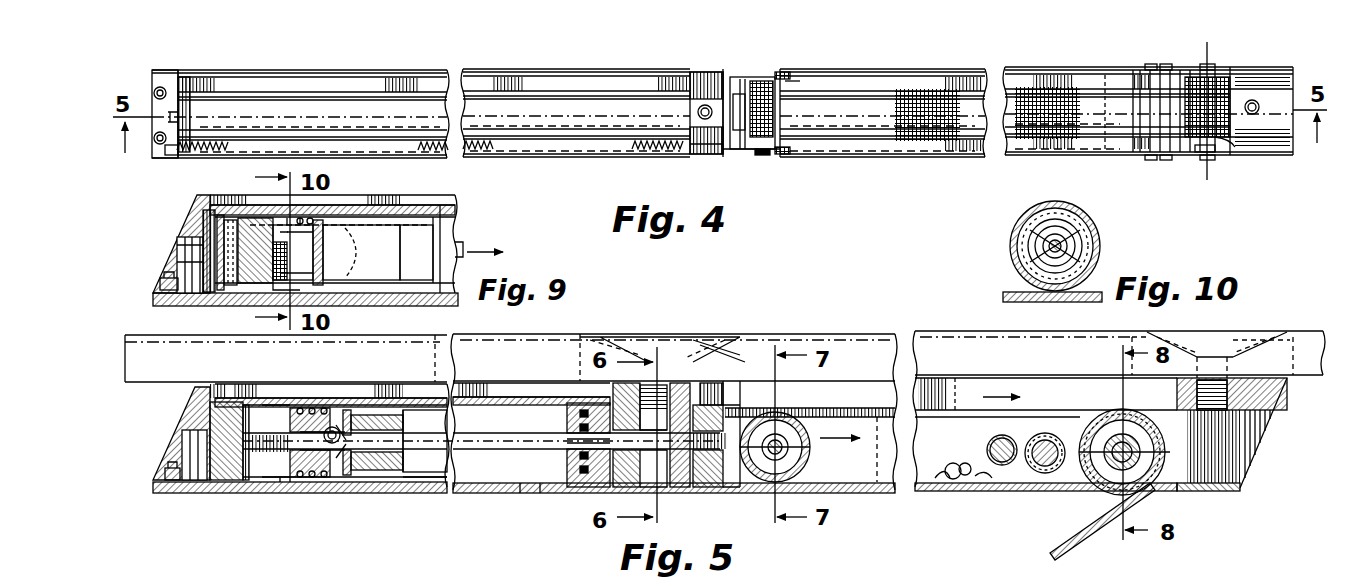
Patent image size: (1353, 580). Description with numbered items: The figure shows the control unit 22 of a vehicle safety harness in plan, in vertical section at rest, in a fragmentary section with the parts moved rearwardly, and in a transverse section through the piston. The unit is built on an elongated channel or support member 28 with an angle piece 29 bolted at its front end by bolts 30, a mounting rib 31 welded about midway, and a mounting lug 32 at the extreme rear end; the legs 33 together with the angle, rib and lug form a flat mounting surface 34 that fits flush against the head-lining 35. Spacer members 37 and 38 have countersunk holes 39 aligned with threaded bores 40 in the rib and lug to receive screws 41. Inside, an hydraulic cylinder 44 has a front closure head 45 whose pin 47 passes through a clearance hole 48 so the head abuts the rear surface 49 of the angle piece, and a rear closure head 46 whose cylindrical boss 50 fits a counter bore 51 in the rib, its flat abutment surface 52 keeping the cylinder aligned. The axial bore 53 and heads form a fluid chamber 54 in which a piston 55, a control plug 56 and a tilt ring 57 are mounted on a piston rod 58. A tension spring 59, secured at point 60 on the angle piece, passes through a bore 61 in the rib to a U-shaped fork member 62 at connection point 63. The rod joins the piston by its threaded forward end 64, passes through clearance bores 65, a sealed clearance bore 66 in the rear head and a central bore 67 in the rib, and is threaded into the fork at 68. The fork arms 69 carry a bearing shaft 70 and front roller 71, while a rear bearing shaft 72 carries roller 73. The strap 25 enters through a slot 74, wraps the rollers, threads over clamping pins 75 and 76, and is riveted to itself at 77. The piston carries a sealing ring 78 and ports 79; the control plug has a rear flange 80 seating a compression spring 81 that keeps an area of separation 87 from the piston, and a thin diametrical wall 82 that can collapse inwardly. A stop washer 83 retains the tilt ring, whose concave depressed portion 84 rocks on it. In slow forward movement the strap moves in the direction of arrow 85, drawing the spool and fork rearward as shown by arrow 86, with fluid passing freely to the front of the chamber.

In FIG. 4, the control unit 22 is at (626, 66).
In FIG. 9, the control unit 22 is at (436, 203).
In FIG. 5, the control unit 22 is at (503, 497).
In FIG. 5, the harness element strap 25 is at (853, 409).
In FIG. 4, the channel or support member 28 is at (307, 88).
In FIG. 9, the channel or support member 28 is at (171, 303).
In FIG. 10, the channel or support member 28 is at (1040, 298).
In FIG. 5, the channel or support member 28 is at (218, 497).
In FIG. 4, the angle piece 29 is at (178, 90).
In FIG. 9, the angle piece 29 is at (197, 213).
In FIG. 5, the angle piece 29 is at (200, 402).
In FIG. 4, the bolts 30 is at (155, 90).
In FIG. 9, the bolts 30 is at (177, 270).
In FIG. 4, the mounting rib 31 is at (701, 81).
In FIG. 5, the mounting rib 31 is at (673, 478).
In FIG. 4, the mounting lug 32 is at (1273, 79).
In FIG. 5, the mounting lug 32 is at (1271, 391).
In FIG. 4, the legs 33 is at (893, 68).
In FIG. 5, the legs 33 is at (1232, 448).
In FIG. 5, the mounting surface 34 is at (1077, 375).
In FIG. 5, the ceiling or head-lining material 35 is at (940, 377).
In FIG. 5, the spacer member 37 is at (728, 353).
In FIG. 5, the spacer member 38 is at (1282, 334).
In FIG. 5, the countersunk holes 39 is at (1228, 359).
In FIG. 4, the threaded bores 40 is at (1258, 106).
In FIG. 5, the threaded bores 40 is at (718, 397).
In FIG. 5, the screws 41 is at (653, 340).
In FIG. 9, the hydraulic cylinder 44 is at (388, 216).
In FIG. 10, the hydraulic cylinder 44 is at (1018, 221).
In FIG. 5, the hydraulic cylinder 44 is at (473, 397).
In FIG. 4, the front closure head 45 is at (182, 108).
In FIG. 9, the front closure head 45 is at (210, 208).
In FIG. 5, the front closure head 45 is at (210, 402).
In FIG. 5, the rear closure head 46 is at (578, 407).
In FIG. 9, the forwardly projecting pin 47 is at (193, 248).
In FIG. 5, the forwardly projecting pin 47 is at (187, 438).
In FIG. 9, the clearance hole 48 is at (200, 263).
In FIG. 5, the clearance hole 48 is at (200, 457).
In FIG. 9, the rear surface 49 is at (229, 212).
In FIG. 5, the rear surface 49 is at (215, 403).
In FIG. 5, the cylindrical boss 50 is at (640, 488).
In FIG. 5, the counter bore 51 is at (597, 481).
In FIG. 5, the flat abutment surface 52 is at (658, 403).
In FIG. 9, the axial bore 53 is at (438, 282).
In FIG. 5, the axial bore 53 is at (530, 488).
In FIG. 9, the fluid chamber 54 is at (458, 223).
In FIG. 5, the fluid chamber 54 is at (432, 460).
In FIG. 9, the piston 55 is at (273, 277).
In FIG. 10, the piston 55 is at (1083, 264).
In FIG. 5, the piston 55 is at (280, 481).
In FIG. 9, the control plug or valve member 56 is at (333, 267).
In FIG. 5, the control plug or valve member 56 is at (323, 477).
In FIG. 9, the tilt ring 57 is at (410, 264).
In FIG. 5, the tilt ring 57 is at (393, 471).
In FIG. 4, the piston rod 58 is at (718, 93).
In FIG. 9, the piston rod 58 is at (462, 242).
In FIG. 10, the piston rod 58 is at (1068, 243).
In FIG. 5, the piston rod 58 is at (493, 443).
In FIG. 4, the tension spring 59 is at (503, 144).
In FIG. 4, the point 60 is at (172, 152).
In FIG. 4, the bore 61 is at (700, 155).
In FIG. 4, the U-shaped fork member 62 is at (769, 123).
In FIG. 5, the U-shaped fork member 62 is at (713, 488).
In FIG. 4, the connection point 63 is at (736, 154).
In FIG. 5, the threaded forward end 64 is at (263, 477).
In FIG. 5, the clearance bores 65 is at (341, 425).
In FIG. 5, the sealed clearance bore 66 is at (570, 447).
In FIG. 5, the central bore 67 is at (708, 408).
In FIG. 4, the threaded connection 68 is at (766, 105).
In FIG. 5, the threaded connection 68 is at (740, 478).
In FIG. 4, the rearwardly extending arms 69 is at (781, 74).
In FIG. 4, the bearing shaft 70 is at (764, 155).
In FIG. 5, the bearing shaft 70 is at (808, 454).
In FIG. 4, the spool or roller member 71 is at (788, 88).
In FIG. 5, the spool or roller member 71 is at (793, 424).
In FIG. 4, the bearing shaft 72 is at (1213, 149).
In FIG. 5, the bearing shaft 72 is at (1133, 457).
In FIG. 4, the spool or roller member 73 is at (1217, 74).
In FIG. 5, the spool or roller member 73 is at (1081, 481).
In FIG. 4, the slot 74 is at (1240, 134).
In FIG. 5, the slot 74 is at (1193, 489).
In FIG. 4, the clamping pin 75 is at (1141, 144).
In FIG. 5, the clamping pin 75 is at (1007, 438).
In FIG. 4, the clamping pin 76 is at (1180, 151).
In FIG. 5, the clamping pin 76 is at (1047, 450).
In FIG. 5, the strap end securement 77 is at (963, 478).
In FIG. 9, the sealing ring 78 is at (340, 294).
In FIG. 10, the sealing ring 78 is at (1042, 217).
In FIG. 5, the sealing ring 78 is at (273, 480).
In FIG. 9, the ports 79 is at (273, 232).
In FIG. 10, the ports 79 is at (1015, 269).
In FIG. 5, the ports 79 is at (250, 423).
In FIG. 9, the rear circular flange 80 is at (367, 220).
In FIG. 5, the rear circular flange 80 is at (328, 430).
In FIG. 9, the compression spring 81 is at (333, 218).
In FIG. 5, the compression spring 81 is at (310, 407).
In FIG. 9, the thin diametrical wall 82 is at (312, 250).
In FIG. 10, the thin diametrical wall 82 is at (1060, 208).
In FIG. 5, the thin diametrical wall 82 is at (307, 477).
In FIG. 9, the stop washer 83 is at (393, 251).
In FIG. 5, the stop washer 83 is at (367, 477).
In FIG. 5, the concave shaped depressed portion 84 is at (350, 427).
In FIG. 5, the arrow 85 is at (1030, 578).
In FIG. 5, the arrow 86 is at (842, 429).
In FIG. 5, the area of separation 87 is at (292, 408).